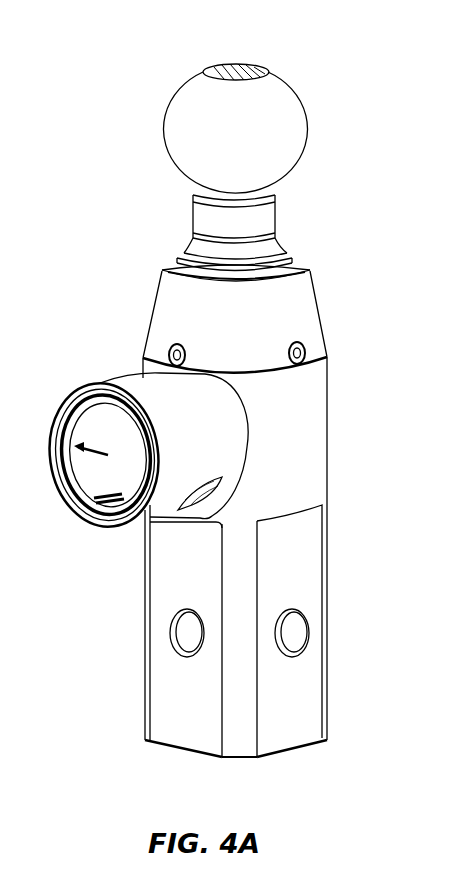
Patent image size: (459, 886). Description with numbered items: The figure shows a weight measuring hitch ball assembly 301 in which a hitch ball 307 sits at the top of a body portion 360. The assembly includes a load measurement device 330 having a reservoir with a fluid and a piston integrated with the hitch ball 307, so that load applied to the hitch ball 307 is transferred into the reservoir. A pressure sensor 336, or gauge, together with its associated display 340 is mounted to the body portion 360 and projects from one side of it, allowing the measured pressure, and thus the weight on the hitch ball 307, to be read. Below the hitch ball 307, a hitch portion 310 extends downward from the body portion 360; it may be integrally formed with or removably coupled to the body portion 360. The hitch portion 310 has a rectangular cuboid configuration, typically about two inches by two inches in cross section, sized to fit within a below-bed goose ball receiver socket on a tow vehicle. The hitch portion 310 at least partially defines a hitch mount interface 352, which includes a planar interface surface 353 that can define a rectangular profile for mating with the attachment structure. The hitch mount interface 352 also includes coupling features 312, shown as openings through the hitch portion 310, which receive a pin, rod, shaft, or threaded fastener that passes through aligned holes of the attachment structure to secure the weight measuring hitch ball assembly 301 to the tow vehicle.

The weight measuring hitch ball assembly 301 is at (120, 40).
The hitch ball 307 is at (283, 63).
The body portion 360 is at (338, 260).
The load measurement device 330 is at (110, 341).
The pressure sensor 336 is at (83, 368).
The display 340 is at (74, 513).
The hitch mount interface 352 is at (359, 538).
The planar interface surface 353 is at (190, 548).
The coupling feature 312 is at (170, 634).
The hitch portion 310 is at (351, 679).